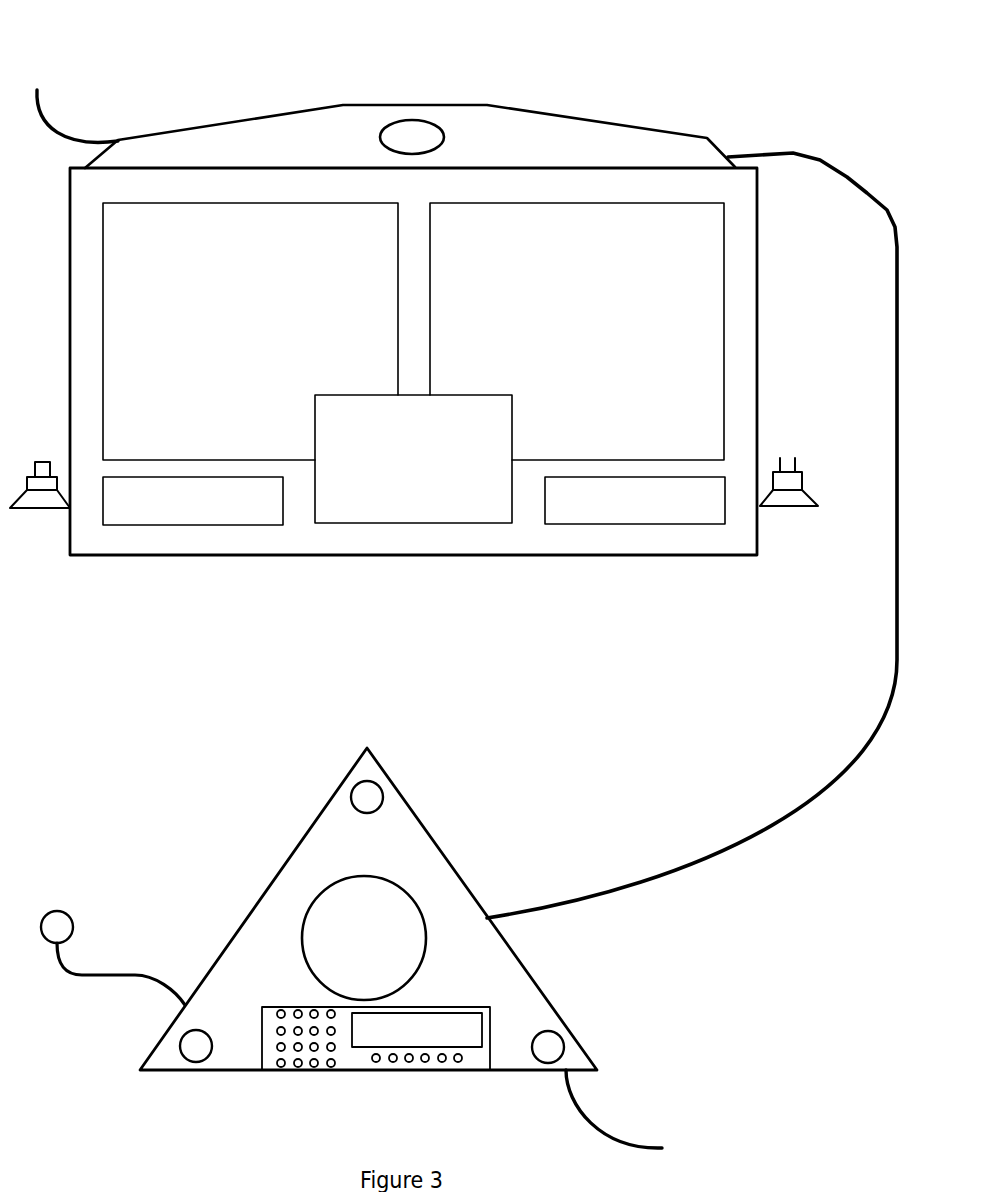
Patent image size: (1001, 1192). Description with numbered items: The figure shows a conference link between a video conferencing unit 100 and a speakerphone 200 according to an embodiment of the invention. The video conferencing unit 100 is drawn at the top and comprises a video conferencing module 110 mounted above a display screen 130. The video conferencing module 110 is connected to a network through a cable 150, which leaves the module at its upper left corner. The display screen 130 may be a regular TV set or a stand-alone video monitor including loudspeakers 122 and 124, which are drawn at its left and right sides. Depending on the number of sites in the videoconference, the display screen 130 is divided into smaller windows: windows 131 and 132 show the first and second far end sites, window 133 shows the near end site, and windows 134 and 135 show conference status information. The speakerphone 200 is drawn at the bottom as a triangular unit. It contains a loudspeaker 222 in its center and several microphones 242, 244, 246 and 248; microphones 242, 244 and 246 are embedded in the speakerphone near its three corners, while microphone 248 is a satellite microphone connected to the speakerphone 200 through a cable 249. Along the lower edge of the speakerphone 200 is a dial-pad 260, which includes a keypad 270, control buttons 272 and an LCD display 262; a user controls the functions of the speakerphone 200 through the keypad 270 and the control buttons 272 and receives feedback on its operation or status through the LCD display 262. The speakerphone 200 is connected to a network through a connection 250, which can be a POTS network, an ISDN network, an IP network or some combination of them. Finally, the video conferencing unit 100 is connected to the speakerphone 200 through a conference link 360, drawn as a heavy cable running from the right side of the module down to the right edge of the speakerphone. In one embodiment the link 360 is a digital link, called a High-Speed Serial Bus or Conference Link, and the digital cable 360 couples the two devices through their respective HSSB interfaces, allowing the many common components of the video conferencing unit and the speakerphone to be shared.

The video conferencing unit 100 is at (290, 68).
The video conferencing module 110 is at (548, 117).
The loudspeaker 122 is at (37, 462).
The loudspeaker 124 is at (795, 458).
The display screen 130 is at (757, 222).
The window 131 is at (398, 313).
The window 132 is at (724, 340).
The window 133 is at (415, 525).
The window 134 is at (185, 525).
The window 135 is at (593, 524).
The cable 150 is at (40, 92).
The speakerphone 200 is at (163, 841).
The loudspeaker 222 is at (338, 878).
The microphone 242 is at (367, 782).
The microphone 244 is at (188, 1030).
The microphone 246 is at (548, 1031).
The satellite microphone 248 is at (60, 910).
The cable 249 is at (97, 972).
The connection 250 is at (598, 1124).
The dial-pad 260 is at (405, 1003).
The LCD display 262 is at (450, 1013).
The keypad 270 is at (306, 1053).
The control buttons 272 is at (393, 1060).
The conference link 360 is at (711, 870).